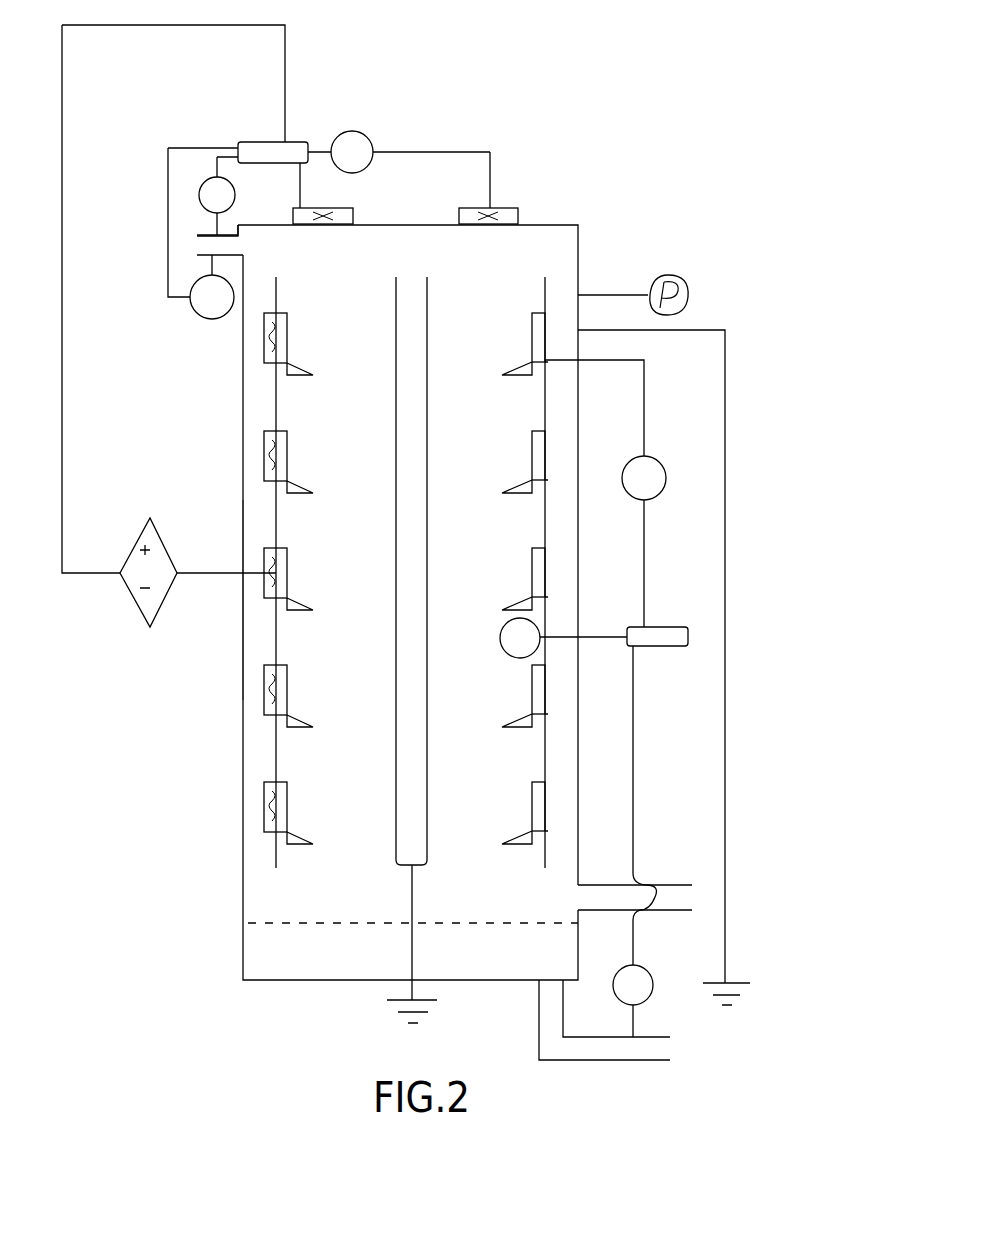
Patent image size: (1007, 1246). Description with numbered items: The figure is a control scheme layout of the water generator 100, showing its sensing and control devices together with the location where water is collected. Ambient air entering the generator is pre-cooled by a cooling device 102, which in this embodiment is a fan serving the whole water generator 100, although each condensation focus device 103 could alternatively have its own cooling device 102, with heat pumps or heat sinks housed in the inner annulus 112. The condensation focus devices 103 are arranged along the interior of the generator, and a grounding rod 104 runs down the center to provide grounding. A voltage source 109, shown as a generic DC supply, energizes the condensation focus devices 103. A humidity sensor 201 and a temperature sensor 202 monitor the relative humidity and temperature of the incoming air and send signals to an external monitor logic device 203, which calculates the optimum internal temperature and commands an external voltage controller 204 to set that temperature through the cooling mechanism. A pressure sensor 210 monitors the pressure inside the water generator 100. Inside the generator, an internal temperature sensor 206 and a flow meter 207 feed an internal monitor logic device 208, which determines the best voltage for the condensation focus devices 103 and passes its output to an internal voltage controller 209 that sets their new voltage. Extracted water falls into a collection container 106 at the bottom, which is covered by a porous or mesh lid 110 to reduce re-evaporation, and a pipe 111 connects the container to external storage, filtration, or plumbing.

The water generator 100 is at (722, 88).
The cooling device 102 is at (350, 210).
The condensation focus device 103 is at (555, 802).
The grounding rod 104 is at (425, 303).
The collection container 106 is at (262, 995).
The voltage source 109 is at (157, 602).
The porous or mesh lid 110 is at (243, 923).
The pipe 111 is at (645, 1068).
The inner annulus 112 is at (256, 627).
The humidity sensor 201 is at (196, 320).
The temperature sensor 202 is at (208, 178).
The external monitor logic device 203 is at (304, 140).
The external voltage controller 204 is at (371, 135).
The internal temperature sensor 206 is at (507, 622).
The flow meter 207 is at (655, 999).
The internal monitor logic device 208 is at (678, 620).
The internal voltage controller 209 is at (660, 460).
The pressure sensor 210 is at (698, 280).